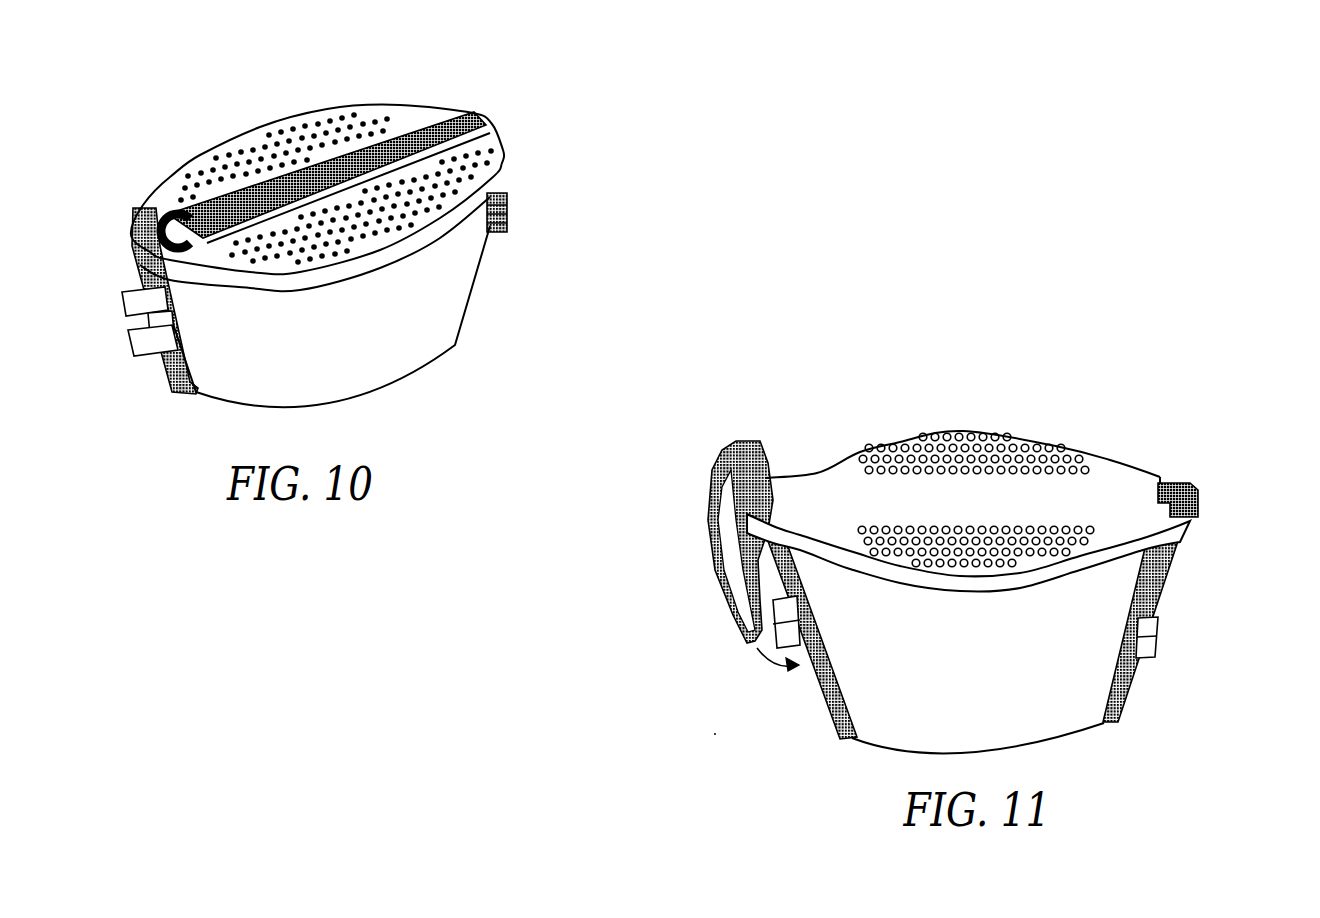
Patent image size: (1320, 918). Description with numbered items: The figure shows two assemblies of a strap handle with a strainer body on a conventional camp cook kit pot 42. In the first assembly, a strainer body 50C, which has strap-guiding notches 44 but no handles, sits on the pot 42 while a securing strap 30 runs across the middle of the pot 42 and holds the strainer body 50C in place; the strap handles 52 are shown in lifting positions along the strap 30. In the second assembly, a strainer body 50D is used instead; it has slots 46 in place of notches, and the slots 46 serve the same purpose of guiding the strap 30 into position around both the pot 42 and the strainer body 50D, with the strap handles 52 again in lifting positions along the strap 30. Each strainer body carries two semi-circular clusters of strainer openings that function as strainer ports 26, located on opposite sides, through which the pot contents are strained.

In FIG. 10, the strainer port 26 is at (302, 252).
In FIG. 11, the strainer port 26 is at (1002, 444).
In FIG. 10, the securing strap 30 is at (412, 122).
In FIG. 11, the securing strap 30 is at (1172, 567).
In FIG. 10, the camp cook kit pot 42 is at (427, 340).
In FIG. 11, the camp cook kit pot 42 is at (1065, 715).
In FIG. 10, the strap-guiding notch 44 is at (137, 209).
In FIG. 11, the slot 46 is at (782, 494).
In FIG. 10, the strainer body 50C is at (486, 147).
In FIG. 11, the strainer body 50D is at (1106, 496).
In FIG. 10, the strap handle 52 is at (502, 244).
In FIG. 11, the strap handle 52 is at (800, 595).